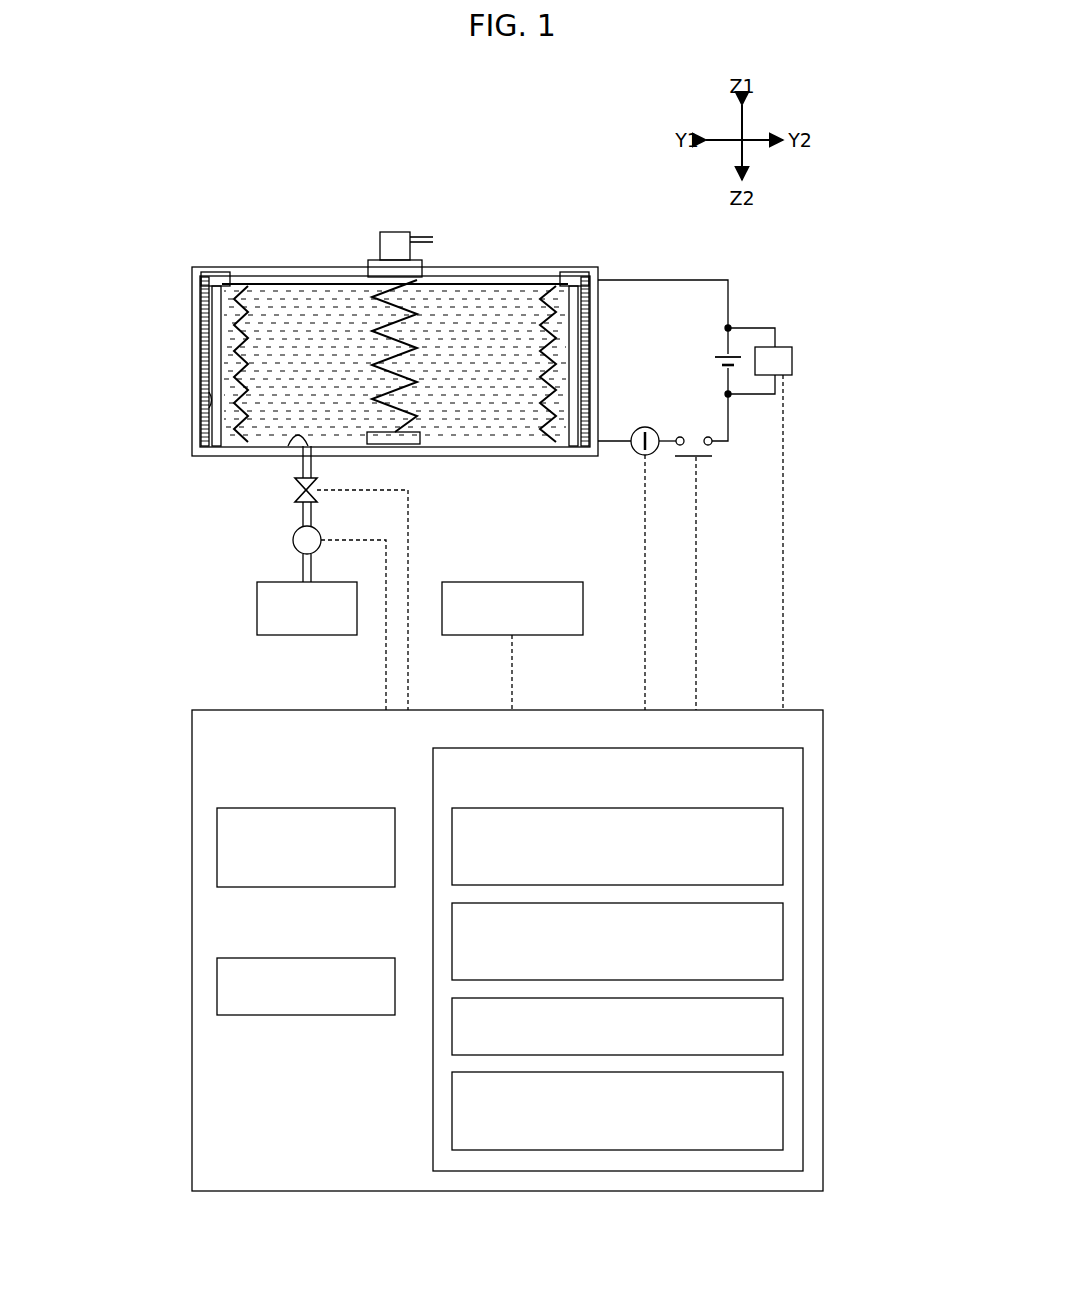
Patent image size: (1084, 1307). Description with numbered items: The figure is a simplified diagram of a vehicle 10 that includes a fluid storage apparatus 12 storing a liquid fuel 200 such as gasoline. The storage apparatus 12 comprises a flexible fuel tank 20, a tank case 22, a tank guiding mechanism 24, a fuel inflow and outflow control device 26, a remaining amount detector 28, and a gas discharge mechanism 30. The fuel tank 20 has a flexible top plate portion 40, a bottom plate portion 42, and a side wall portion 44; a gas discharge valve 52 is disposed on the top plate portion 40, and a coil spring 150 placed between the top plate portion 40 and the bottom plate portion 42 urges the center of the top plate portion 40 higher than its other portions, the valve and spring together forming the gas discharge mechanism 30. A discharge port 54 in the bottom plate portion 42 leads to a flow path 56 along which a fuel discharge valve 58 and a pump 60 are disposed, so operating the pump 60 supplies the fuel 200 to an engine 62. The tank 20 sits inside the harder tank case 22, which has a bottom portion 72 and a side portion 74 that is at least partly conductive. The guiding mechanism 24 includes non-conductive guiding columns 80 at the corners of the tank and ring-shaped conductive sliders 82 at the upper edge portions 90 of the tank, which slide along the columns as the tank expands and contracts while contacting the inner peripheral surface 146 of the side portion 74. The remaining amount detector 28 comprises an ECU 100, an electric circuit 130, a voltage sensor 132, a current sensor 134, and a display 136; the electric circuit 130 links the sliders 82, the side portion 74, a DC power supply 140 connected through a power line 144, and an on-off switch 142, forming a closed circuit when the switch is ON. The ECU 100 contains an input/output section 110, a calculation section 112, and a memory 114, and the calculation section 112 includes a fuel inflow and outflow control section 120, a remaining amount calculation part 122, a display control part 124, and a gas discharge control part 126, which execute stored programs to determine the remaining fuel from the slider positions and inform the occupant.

The vehicle 10 is at (559, 139).
The fluid storage apparatus 12 is at (290, 257).
The flexible fuel tank 20 is at (395, 361).
The tank case 22 is at (396, 492).
The tank guiding mechanism 24 is at (396, 361).
The fuel inflow and outflow control device 26 is at (260, 535).
The remaining amount detector 28 is at (725, 360).
The gas discharge mechanism 30 is at (406, 222).
The top plate portion 40 is at (290, 286).
The bottom plate portion 42 is at (395, 397).
The side wall portion 44 is at (252, 346).
The gas discharge valve 52 is at (395, 231).
The discharge port 54 is at (293, 435).
The flow path 56 is at (313, 464).
The fuel discharge valve 58 is at (315, 494).
The pump 60 is at (294, 536).
The engine 62 is at (257, 596).
The bottom portion 72 is at (394, 476).
The side portion 74 is at (196, 451).
The guiding column 80 is at (160, 300).
The slider 82 is at (205, 281).
The upper edge portion 90 is at (230, 263).
The ECU 100 is at (266, 710).
The input/output section 110 is at (322, 808).
The calculation section 112 is at (526, 748).
The memory 114 is at (322, 958).
The fuel inflow and outflow control section 120 is at (783, 831).
The remaining amount calculation part 122 is at (783, 926).
The display control part 124 is at (783, 1020).
The gas discharge control part 126 is at (783, 1094).
The electric circuit 130 is at (725, 360).
The voltage sensor 132 is at (792, 357).
The current sensor 134 is at (641, 428).
The display 136 is at (450, 582).
The DC power supply 140 is at (723, 362).
The on-off switch 142 is at (702, 458).
The power line 144 is at (716, 280).
The inner peripheral surface 146 is at (205, 412).
The coil spring 150 is at (357, 282).
The fuel 200 is at (453, 292).